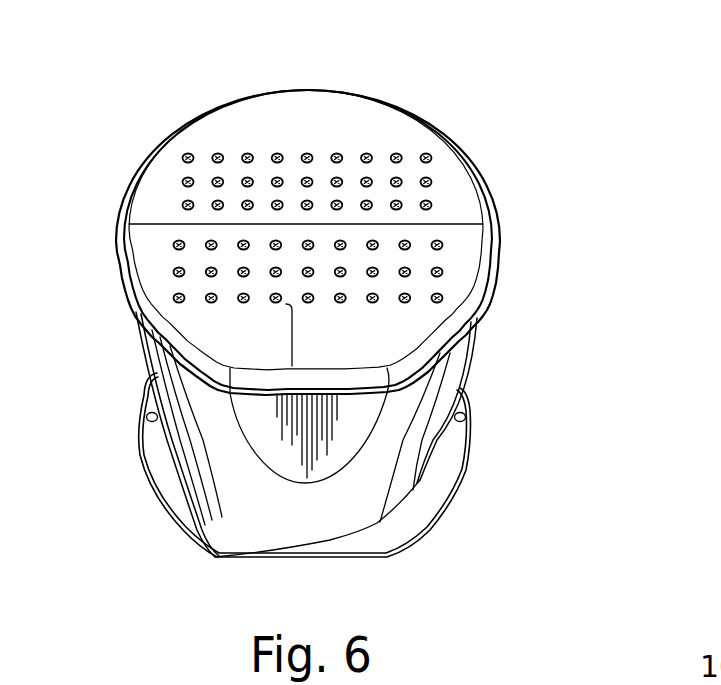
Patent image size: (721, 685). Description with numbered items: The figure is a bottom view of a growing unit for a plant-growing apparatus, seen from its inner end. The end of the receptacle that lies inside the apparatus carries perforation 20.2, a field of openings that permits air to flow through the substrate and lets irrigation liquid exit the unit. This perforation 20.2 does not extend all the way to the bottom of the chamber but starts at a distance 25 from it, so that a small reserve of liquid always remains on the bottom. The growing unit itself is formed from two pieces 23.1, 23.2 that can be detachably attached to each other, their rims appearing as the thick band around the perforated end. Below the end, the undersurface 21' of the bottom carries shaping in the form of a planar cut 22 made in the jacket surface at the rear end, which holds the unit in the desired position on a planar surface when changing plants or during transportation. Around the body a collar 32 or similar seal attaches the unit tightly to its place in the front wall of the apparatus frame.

The perforation 20.2 is at (330, 133).
The piece 23.2 is at (474, 170).
The piece 23.1 is at (487, 290).
The distance 25 is at (262, 334).
The planar cut 22 is at (277, 435).
The undersurface 21' is at (306, 469).
The collar 32 is at (425, 510).